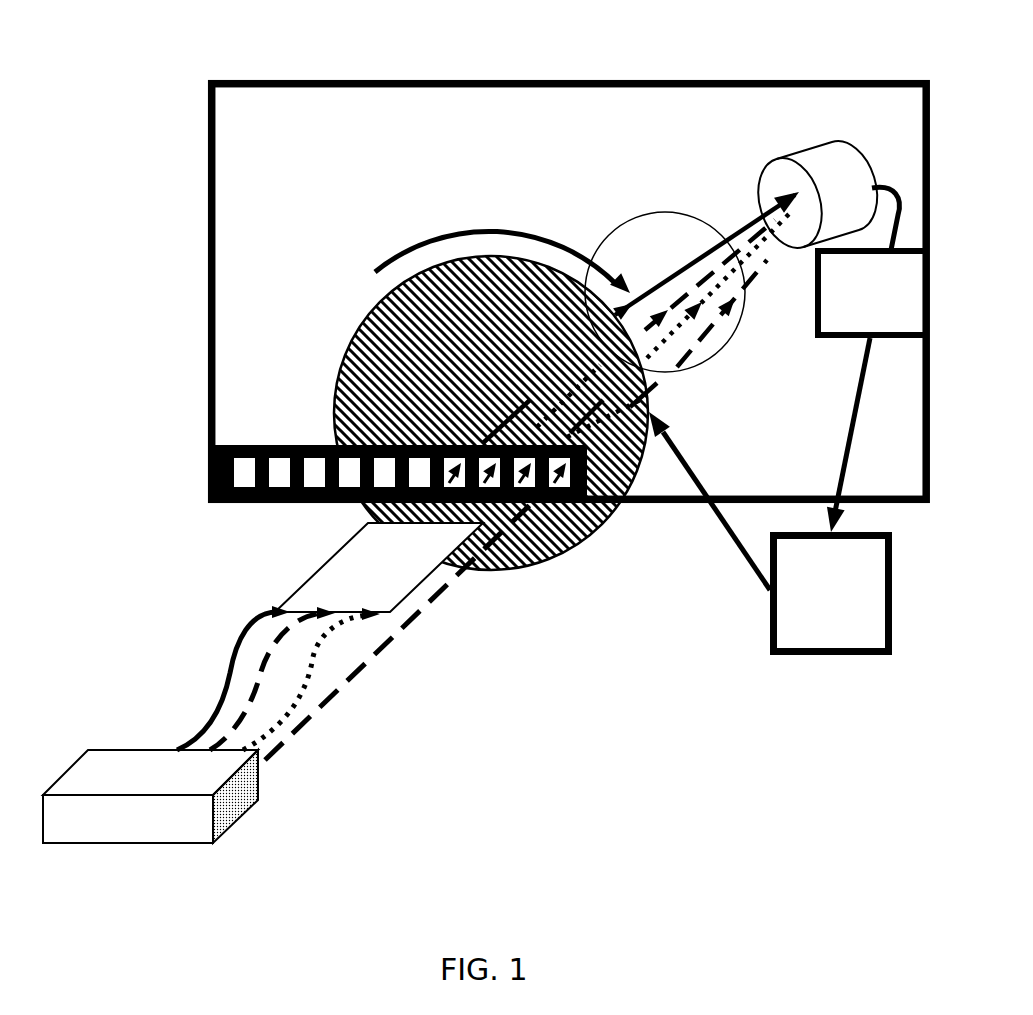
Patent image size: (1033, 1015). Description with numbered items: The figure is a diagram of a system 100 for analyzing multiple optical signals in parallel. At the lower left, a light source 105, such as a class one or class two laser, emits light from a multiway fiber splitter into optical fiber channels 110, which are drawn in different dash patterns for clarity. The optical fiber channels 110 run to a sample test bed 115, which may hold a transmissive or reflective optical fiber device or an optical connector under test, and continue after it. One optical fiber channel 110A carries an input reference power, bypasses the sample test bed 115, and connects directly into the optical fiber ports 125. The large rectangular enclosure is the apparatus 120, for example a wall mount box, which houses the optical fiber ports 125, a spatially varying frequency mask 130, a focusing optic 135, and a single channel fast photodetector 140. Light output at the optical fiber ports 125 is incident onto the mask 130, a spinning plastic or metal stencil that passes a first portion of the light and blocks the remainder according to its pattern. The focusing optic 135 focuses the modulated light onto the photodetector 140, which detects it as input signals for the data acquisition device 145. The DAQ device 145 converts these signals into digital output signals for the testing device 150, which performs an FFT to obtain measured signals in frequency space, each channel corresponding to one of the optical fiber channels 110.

The system 100 is at (200, 63).
The light source 105 is at (175, 750).
The optical fiber channels 110 is at (198, 713).
The optical fiber channel 110A is at (330, 706).
The sample test bed 115 is at (322, 568).
The apparatus 120 is at (207, 290).
The optical fiber ports 125 is at (258, 444).
The spatially varying frequency mask 130 is at (331, 400).
The focusing optic 135 is at (662, 213).
The single channel fast photodetector 140 is at (806, 153).
The data acquisition (DAQ) device 145 is at (855, 319).
The testing device 150 is at (815, 635).